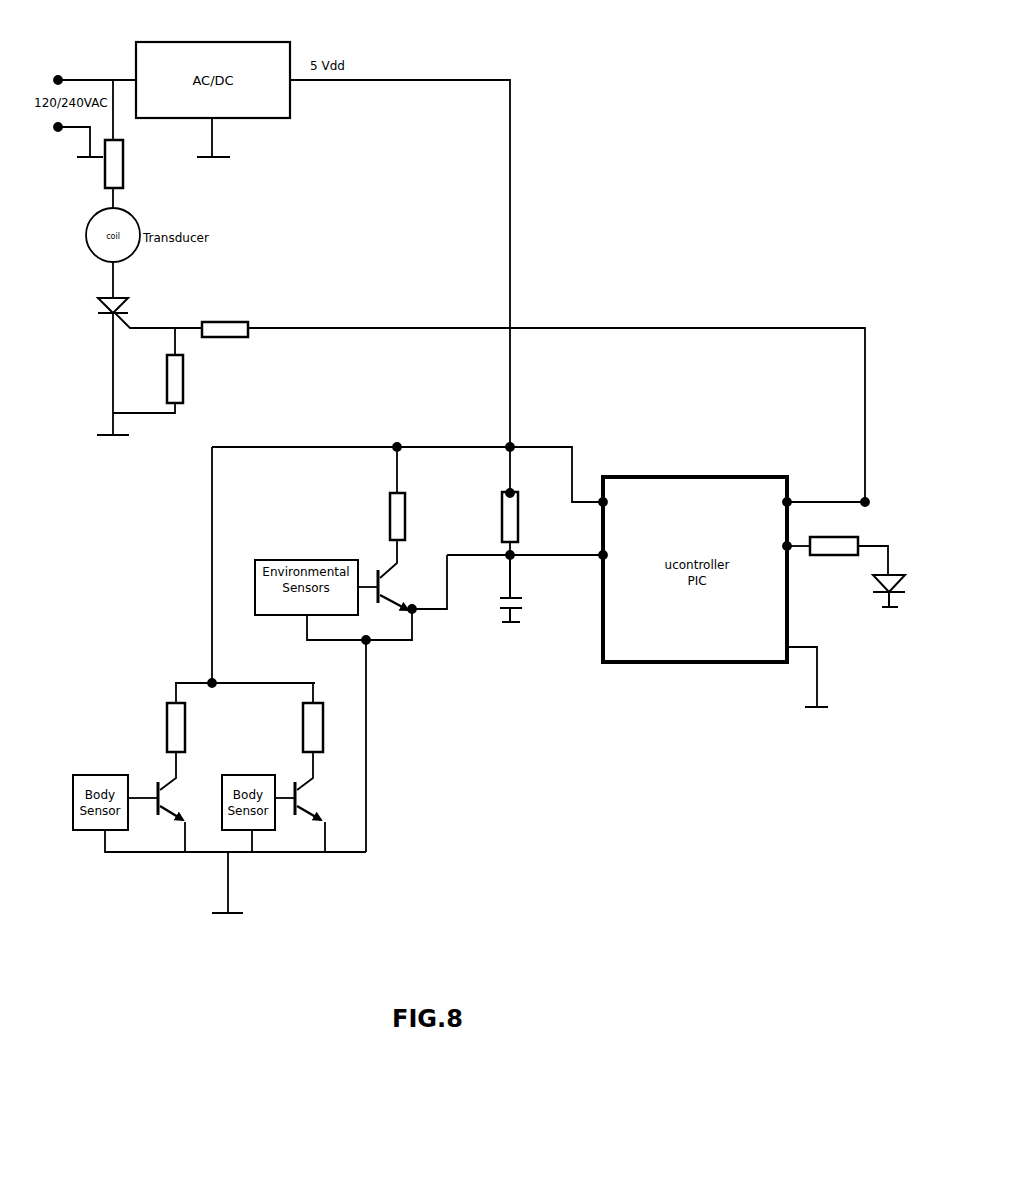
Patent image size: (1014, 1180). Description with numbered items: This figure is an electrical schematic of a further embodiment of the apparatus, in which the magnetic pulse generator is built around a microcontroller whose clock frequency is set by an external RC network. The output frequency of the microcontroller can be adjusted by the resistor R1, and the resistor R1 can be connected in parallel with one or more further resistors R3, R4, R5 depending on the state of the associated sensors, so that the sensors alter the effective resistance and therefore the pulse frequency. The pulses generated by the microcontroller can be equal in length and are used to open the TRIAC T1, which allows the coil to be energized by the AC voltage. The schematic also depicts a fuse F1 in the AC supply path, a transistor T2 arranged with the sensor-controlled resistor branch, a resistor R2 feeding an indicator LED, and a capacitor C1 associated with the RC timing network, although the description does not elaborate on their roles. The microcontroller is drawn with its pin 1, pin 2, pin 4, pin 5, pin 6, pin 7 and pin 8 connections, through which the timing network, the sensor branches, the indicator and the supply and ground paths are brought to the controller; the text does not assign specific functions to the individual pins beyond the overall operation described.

The fuse F1 is at (125, 174).
The TRIAC T1 is at (149, 364).
The transistor T2 is at (383, 595).
The resistor R1 is at (495, 522).
The resistor R2 is at (837, 549).
The resistor R3 is at (381, 512).
The resistor R4 is at (533, 548).
The resistor R5 is at (161, 559).
The capacitor C1 is at (500, 588).
The light emitting diode LED is at (875, 591).
The microcontroller pin 1 is at (609, 503).
The microcontroller pin 2 is at (609, 556).
The microcontroller pin 4 is at (616, 648).
The microcontroller pin 5 is at (781, 503).
The microcontroller pin 6 is at (781, 547).
The microcontroller pin 7 is at (775, 603).
The microcontroller pin 8 is at (799, 674).